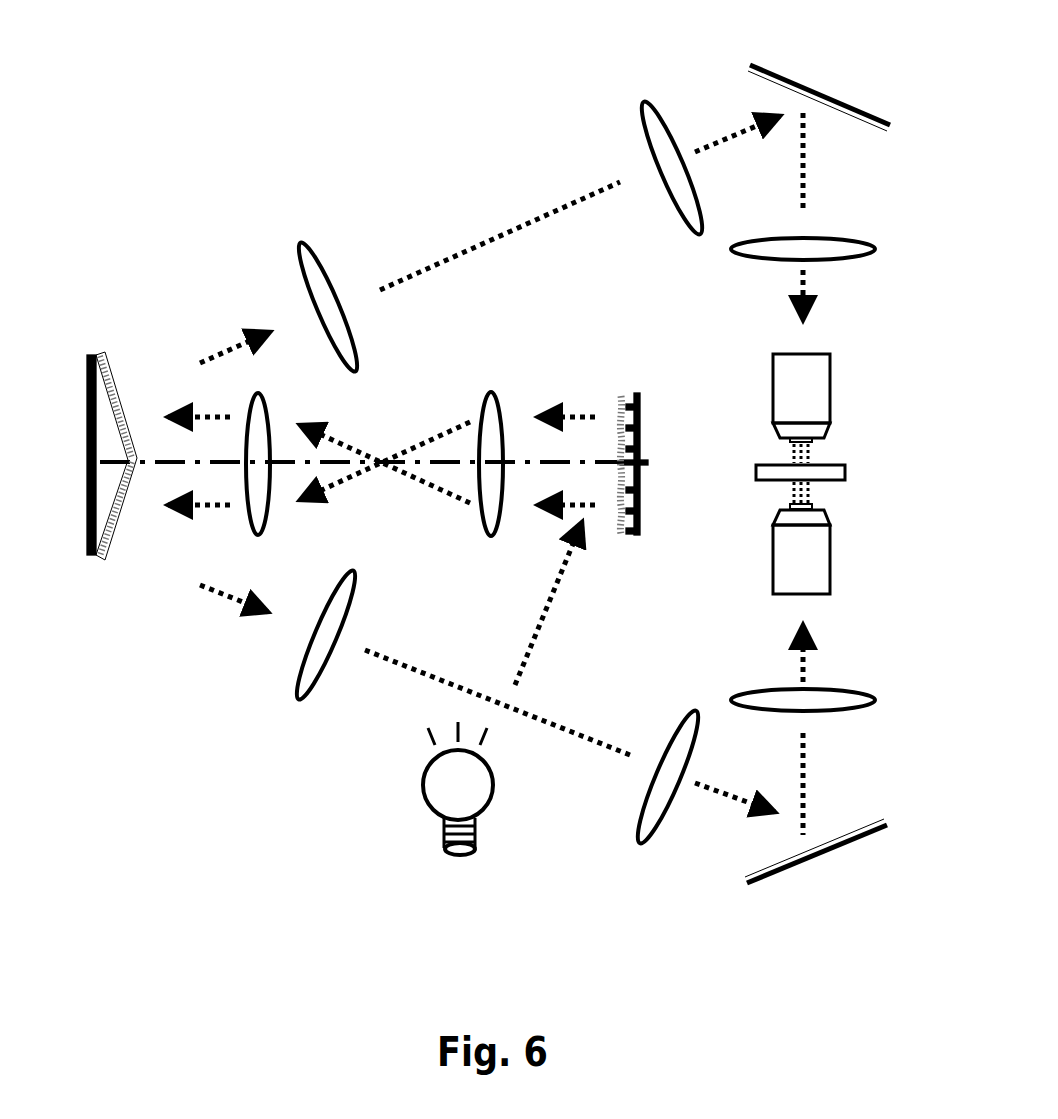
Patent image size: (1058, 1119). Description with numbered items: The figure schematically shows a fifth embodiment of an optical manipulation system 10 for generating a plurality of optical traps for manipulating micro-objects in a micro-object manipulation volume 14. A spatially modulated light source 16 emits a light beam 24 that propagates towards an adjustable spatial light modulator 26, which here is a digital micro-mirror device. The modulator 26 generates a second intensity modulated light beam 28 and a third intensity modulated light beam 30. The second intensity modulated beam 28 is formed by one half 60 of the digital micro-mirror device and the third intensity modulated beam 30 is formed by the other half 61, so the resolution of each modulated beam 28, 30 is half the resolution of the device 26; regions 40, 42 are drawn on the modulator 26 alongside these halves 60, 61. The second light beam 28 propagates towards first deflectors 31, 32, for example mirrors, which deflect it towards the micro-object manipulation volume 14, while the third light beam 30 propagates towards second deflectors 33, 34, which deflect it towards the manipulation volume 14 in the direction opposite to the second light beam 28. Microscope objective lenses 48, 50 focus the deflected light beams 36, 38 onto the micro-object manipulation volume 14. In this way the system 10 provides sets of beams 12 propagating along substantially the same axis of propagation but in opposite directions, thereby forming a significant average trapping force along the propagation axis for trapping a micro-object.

The optical manipulation system 10 is at (493, 100).
The sets of beams 12 is at (808, 455).
The micro-object manipulation volume 14 is at (785, 464).
The spatially modulated light source 16 is at (497, 783).
The light beam 24 is at (543, 620).
The adjustable spatial light modulator 26 is at (640, 530).
The second intensity modulated light beam 28 is at (230, 346).
The third intensity modulated light beam 30 is at (540, 415).
The first deflector 31 is at (112, 392).
The first deflector 32 is at (860, 125).
The second deflector 33 is at (112, 535).
The second deflector 34 is at (850, 828).
The deflected light beam 36 is at (810, 305).
The deflected light beam 38 is at (810, 645).
The first reticle region 40 is at (618, 398).
The second reticle region 42 is at (618, 425).
The microscope objective lens 48 is at (830, 383).
The microscope objective lens 50 is at (830, 565).
The one half of the DMD 60 is at (641, 490).
The other half of the DMD 61 is at (641, 425).